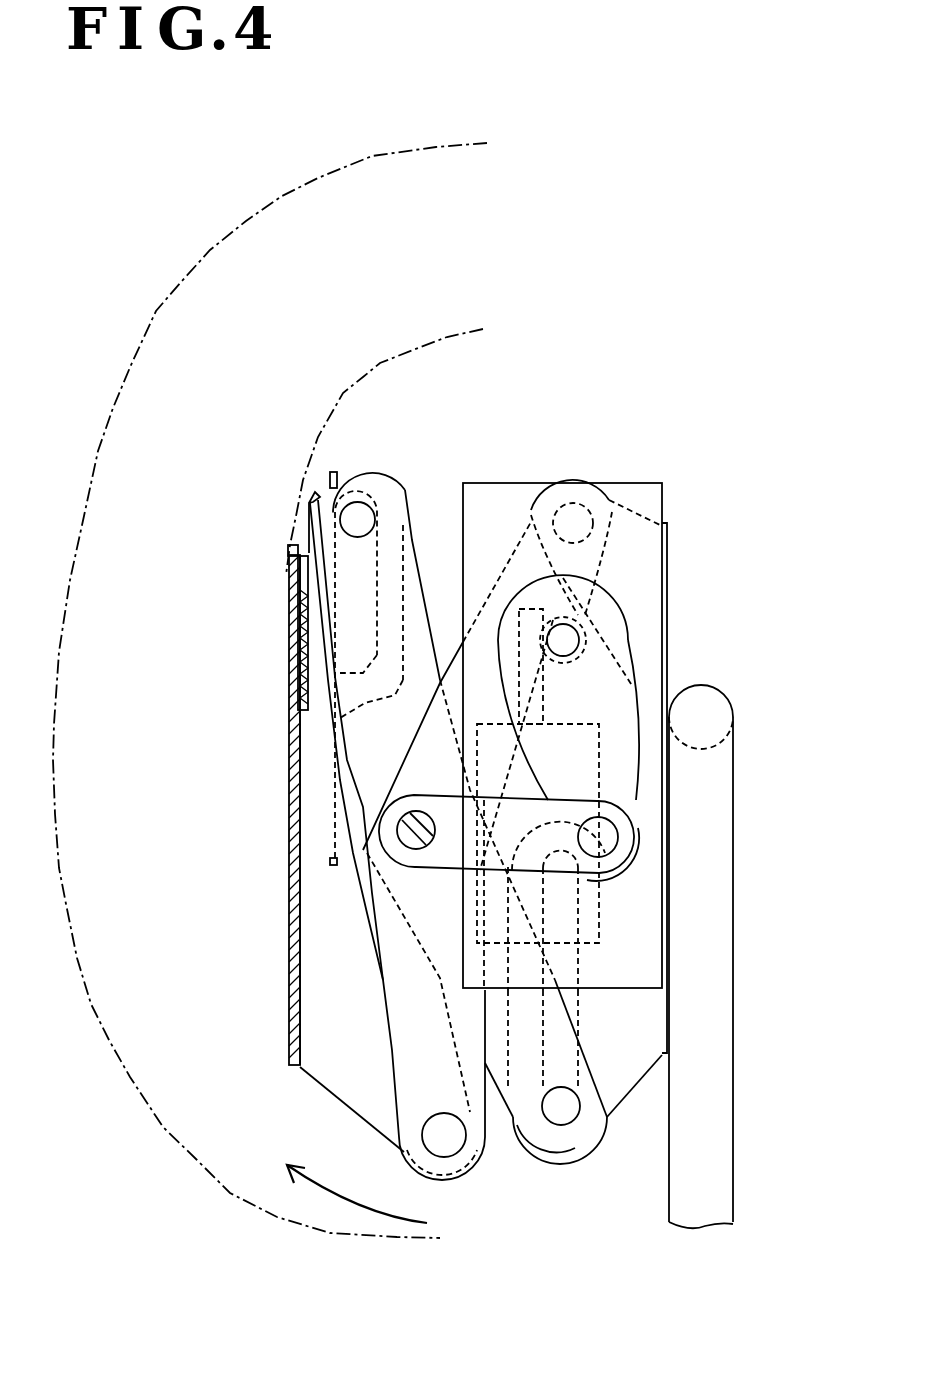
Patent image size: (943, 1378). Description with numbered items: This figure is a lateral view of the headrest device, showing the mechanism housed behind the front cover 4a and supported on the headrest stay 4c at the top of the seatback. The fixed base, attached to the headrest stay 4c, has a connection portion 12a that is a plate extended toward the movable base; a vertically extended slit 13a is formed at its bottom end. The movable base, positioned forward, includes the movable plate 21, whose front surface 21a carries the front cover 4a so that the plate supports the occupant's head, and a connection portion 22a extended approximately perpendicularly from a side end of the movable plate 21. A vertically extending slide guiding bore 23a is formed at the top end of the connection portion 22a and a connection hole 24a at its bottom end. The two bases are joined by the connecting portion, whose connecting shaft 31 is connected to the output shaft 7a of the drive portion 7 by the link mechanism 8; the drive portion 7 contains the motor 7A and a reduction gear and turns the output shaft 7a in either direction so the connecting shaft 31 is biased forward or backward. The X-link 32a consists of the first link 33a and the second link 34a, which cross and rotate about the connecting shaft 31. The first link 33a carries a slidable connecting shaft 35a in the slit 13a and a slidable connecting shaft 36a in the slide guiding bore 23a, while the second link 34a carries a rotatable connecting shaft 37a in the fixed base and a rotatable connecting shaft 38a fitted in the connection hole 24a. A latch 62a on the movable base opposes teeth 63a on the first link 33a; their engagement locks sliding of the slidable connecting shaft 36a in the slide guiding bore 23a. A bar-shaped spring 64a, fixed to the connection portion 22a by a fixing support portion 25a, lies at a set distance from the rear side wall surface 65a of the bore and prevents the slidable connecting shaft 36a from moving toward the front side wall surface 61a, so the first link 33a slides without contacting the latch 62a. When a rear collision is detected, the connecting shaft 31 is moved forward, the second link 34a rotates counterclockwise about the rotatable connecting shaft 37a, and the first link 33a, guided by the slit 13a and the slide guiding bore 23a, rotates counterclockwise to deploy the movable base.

The front cover 4a is at (163, 302).
The headrest stay 4c is at (736, 960).
The drive portion 7 is at (628, 482).
The motor 7A is at (600, 735).
The output shaft 7a is at (566, 657).
The link mechanism 8 is at (626, 877).
The connection portion 12a is at (630, 1080).
The slit 13a is at (573, 993).
The movable plate 21 is at (297, 1068).
The front surface 21a is at (289, 927).
The connection portion 22a is at (343, 1103).
The slide guiding bore 23a is at (366, 492).
The connection hole 24a is at (430, 1122).
The fixing support portion 25a is at (330, 862).
The connecting shaft 31 is at (430, 849).
The X-link 32a is at (513, 1187).
The first link 33a is at (413, 567).
The second link 34a is at (373, 917).
The slidable connecting shaft 35a is at (560, 1126).
The slidable connecting shaft 36a is at (373, 517).
The rotatable connecting shaft 37a is at (560, 484).
The rotatable connecting shaft 38a is at (450, 1152).
The front side wall surface 61a is at (318, 540).
The latch 62a is at (290, 572).
The teeth 63a is at (313, 492).
The spring 64a is at (327, 470).
The rear side wall surface 65a is at (371, 702).